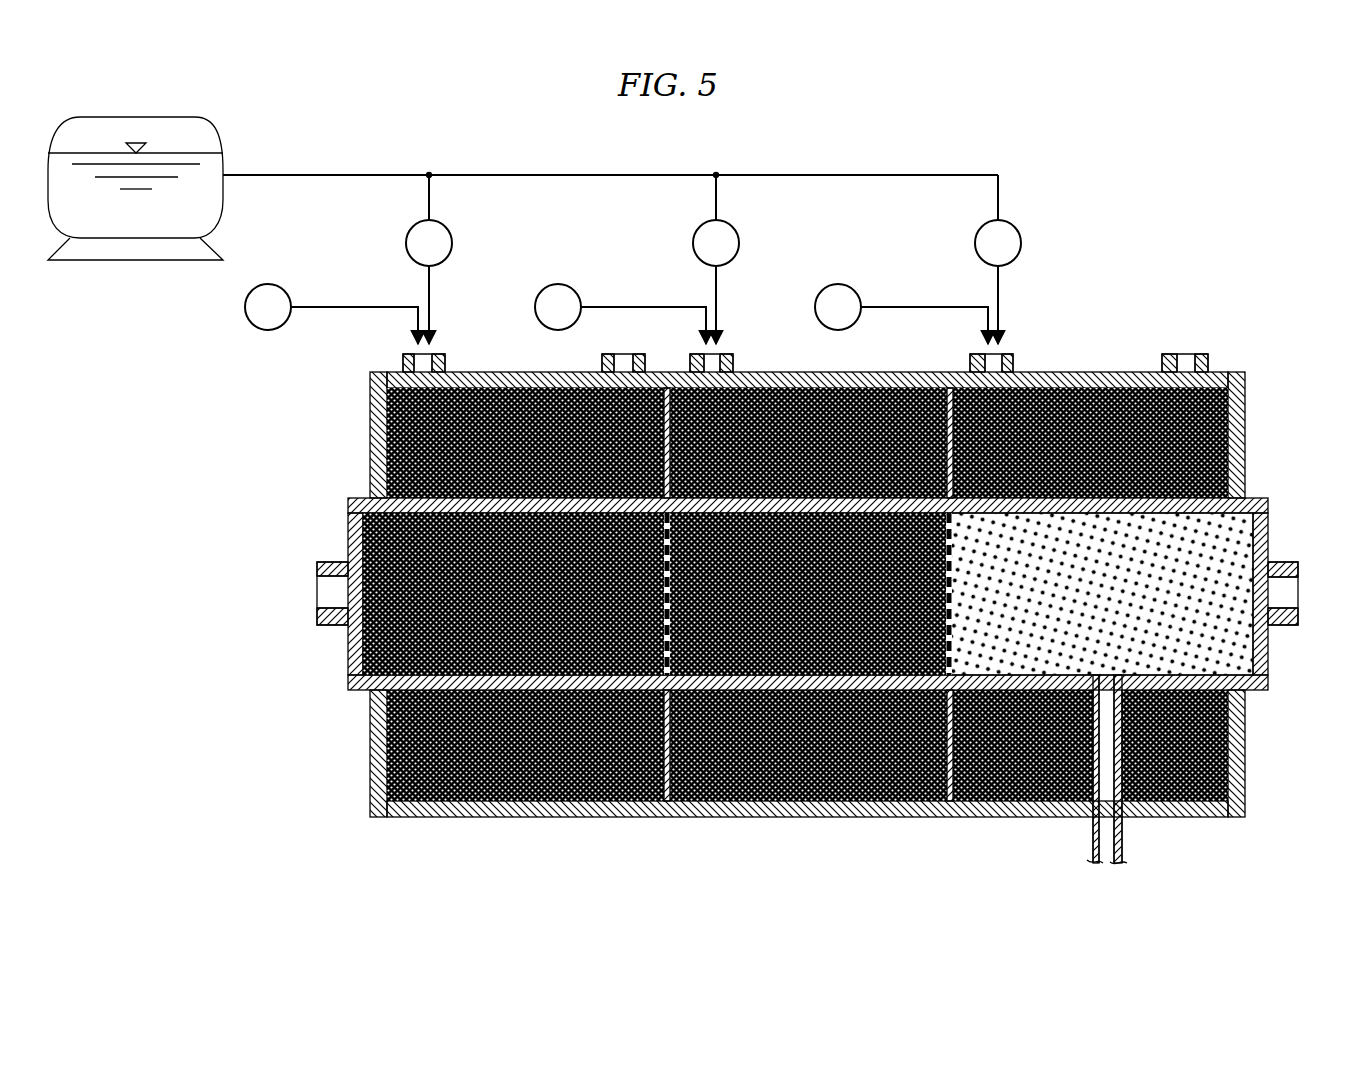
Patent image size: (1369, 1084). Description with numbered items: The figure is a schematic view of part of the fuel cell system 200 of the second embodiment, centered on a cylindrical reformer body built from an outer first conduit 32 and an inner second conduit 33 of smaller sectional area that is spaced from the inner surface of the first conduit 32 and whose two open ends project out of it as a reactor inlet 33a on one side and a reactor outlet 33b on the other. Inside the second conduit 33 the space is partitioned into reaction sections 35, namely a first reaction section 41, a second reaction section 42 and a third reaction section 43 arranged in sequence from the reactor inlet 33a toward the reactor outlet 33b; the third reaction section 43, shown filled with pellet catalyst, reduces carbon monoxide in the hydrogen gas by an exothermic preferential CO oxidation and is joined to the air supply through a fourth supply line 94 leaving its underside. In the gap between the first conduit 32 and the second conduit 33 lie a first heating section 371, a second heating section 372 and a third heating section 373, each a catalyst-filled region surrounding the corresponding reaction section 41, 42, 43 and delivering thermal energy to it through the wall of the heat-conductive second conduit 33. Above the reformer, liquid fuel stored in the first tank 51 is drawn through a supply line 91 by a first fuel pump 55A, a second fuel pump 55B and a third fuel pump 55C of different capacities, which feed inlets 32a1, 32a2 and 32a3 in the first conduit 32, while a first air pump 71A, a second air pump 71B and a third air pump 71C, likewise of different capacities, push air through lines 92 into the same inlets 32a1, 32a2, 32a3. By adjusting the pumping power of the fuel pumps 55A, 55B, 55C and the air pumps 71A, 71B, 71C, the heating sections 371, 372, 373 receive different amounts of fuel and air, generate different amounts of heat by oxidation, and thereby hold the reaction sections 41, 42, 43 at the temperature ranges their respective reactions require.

The fuel cell system 200 is at (1191, 188).
The first tank 51 is at (218, 141).
The liquid supply pipe 91 is at (430, 200).
The first fuel pump 55A is at (452, 246).
The second fuel pump 55B is at (739, 246).
The third fuel pump 55C is at (1021, 246).
The first air pump 71A is at (245, 308).
The second air pump 71B is at (535, 308).
The third air pump 71C is at (815, 308).
The gas supply pipe 92 is at (350, 305).
The first conduit 32 is at (1232, 379).
The inlet 32a1 is at (402, 360).
The inlet 32a2 is at (734, 361).
The inlet 32a3 is at (1014, 361).
The second conduit 33 is at (1238, 480).
The reactor inlet 33a is at (312, 591).
The reactor outlet 33b is at (1300, 591).
The first heating section 371 is at (530, 800).
The second heating section 372 is at (857, 801).
The third heating section 373 is at (997, 801).
The first reaction section 41 is at (554, 690).
The second reaction section 42 is at (806, 690).
The third reaction section 43 is at (1040, 690).
The reaction sections 35 is at (551, 903).
The fourth supply line 94 is at (1124, 834).